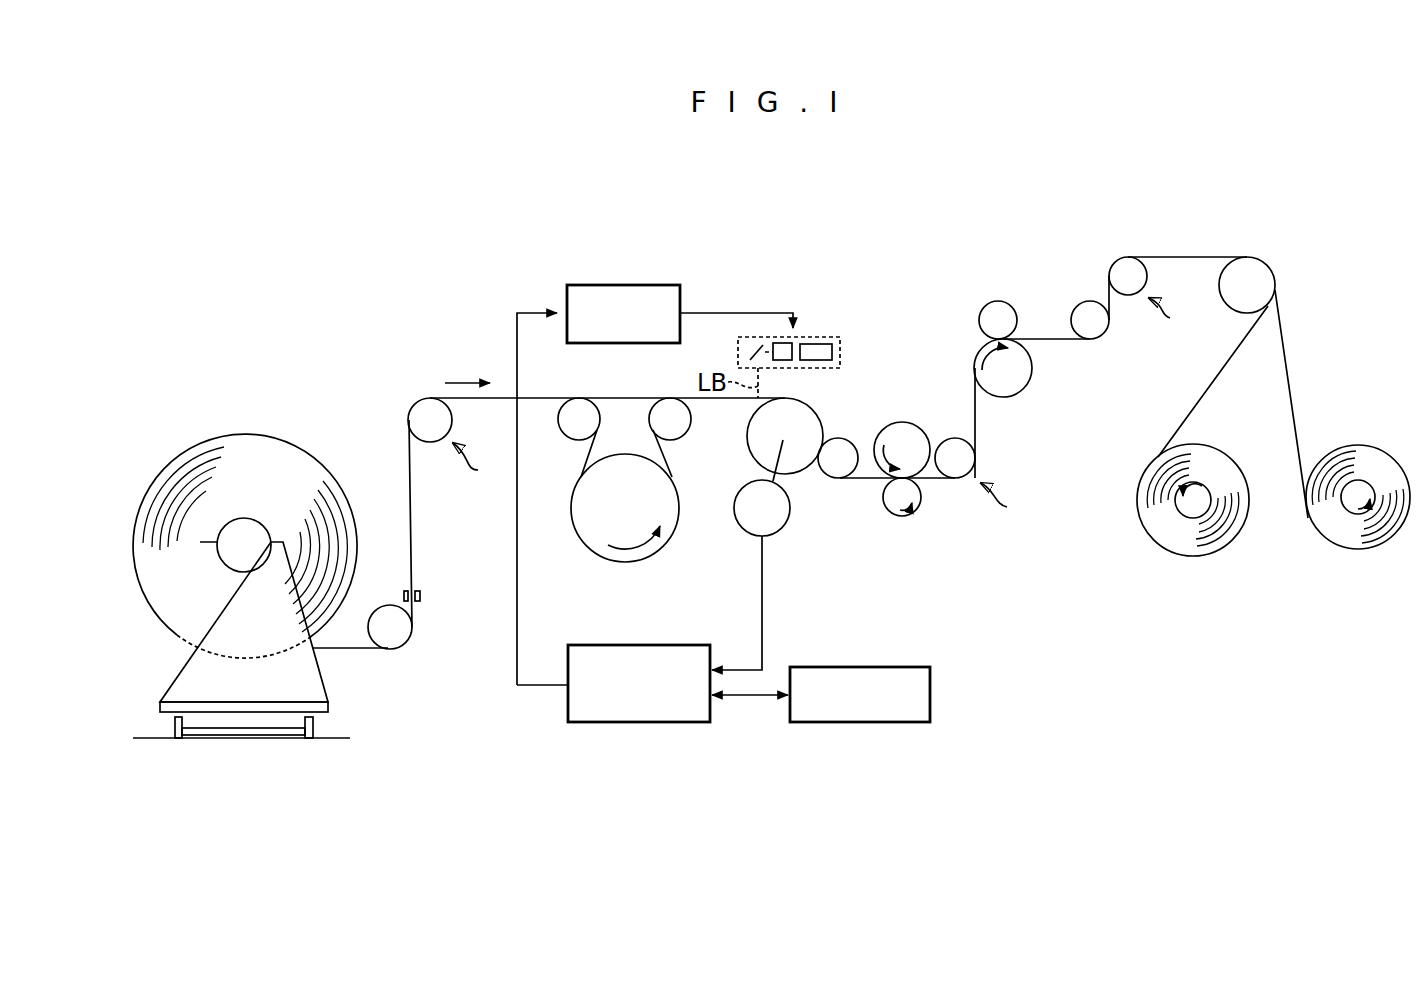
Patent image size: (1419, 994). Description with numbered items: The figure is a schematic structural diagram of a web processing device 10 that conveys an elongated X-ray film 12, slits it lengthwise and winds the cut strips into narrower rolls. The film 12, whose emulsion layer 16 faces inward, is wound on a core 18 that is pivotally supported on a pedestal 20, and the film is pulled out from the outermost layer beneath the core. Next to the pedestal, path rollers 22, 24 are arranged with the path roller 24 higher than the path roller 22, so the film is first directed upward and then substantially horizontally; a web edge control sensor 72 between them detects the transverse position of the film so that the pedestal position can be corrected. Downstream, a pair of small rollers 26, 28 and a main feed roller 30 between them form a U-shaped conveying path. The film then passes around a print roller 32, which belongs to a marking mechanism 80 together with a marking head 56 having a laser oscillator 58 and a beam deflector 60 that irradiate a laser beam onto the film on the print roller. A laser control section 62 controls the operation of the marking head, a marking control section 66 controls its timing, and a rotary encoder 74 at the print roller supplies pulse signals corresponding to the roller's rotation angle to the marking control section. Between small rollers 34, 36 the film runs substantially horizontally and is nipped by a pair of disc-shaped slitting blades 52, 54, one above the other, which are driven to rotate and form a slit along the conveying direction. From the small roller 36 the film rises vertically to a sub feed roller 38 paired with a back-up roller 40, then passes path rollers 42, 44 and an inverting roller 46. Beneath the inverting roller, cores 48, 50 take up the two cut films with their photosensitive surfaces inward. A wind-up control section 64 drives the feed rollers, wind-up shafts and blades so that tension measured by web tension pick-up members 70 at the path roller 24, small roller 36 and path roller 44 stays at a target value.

The web processing device 10 is at (883, 215).
The X-ray film 12 is at (345, 657).
The emulsion layer 16 is at (410, 490).
The core 18 is at (250, 518).
The pedestal 20 is at (175, 657).
The path roller 22 is at (410, 640).
The path roller 24 is at (418, 412).
The small roller 26 is at (582, 410).
The small roller 28 is at (672, 410).
The main feed roller 30 is at (588, 537).
The print roller 32 is at (757, 433).
The small roller 34 is at (842, 447).
The small roller 36 is at (957, 447).
The sub feed roller 38 is at (1017, 380).
The back-up roller 40 is at (1003, 302).
The path roller 42 is at (1100, 327).
The path roller 44 is at (1130, 262).
The inverting roller 46 is at (1258, 268).
The core 48 is at (1198, 517).
The core 50 is at (1365, 516).
The slitting blade 52 is at (902, 423).
The slitting blade 54 is at (915, 513).
The marking head 56 is at (827, 323).
The laser oscillator 58 is at (835, 351).
The beam deflector 60 is at (777, 345).
The laser control section 62 is at (627, 284).
The wind-up control section 64 is at (863, 723).
The marking control section 66 is at (630, 723).
The web tension pick-up member 70 is at (826, 413).
The web edge control sensor 72 is at (432, 587).
The rotary encoder 74 is at (778, 527).
The marking mechanism 80 is at (687, 238).